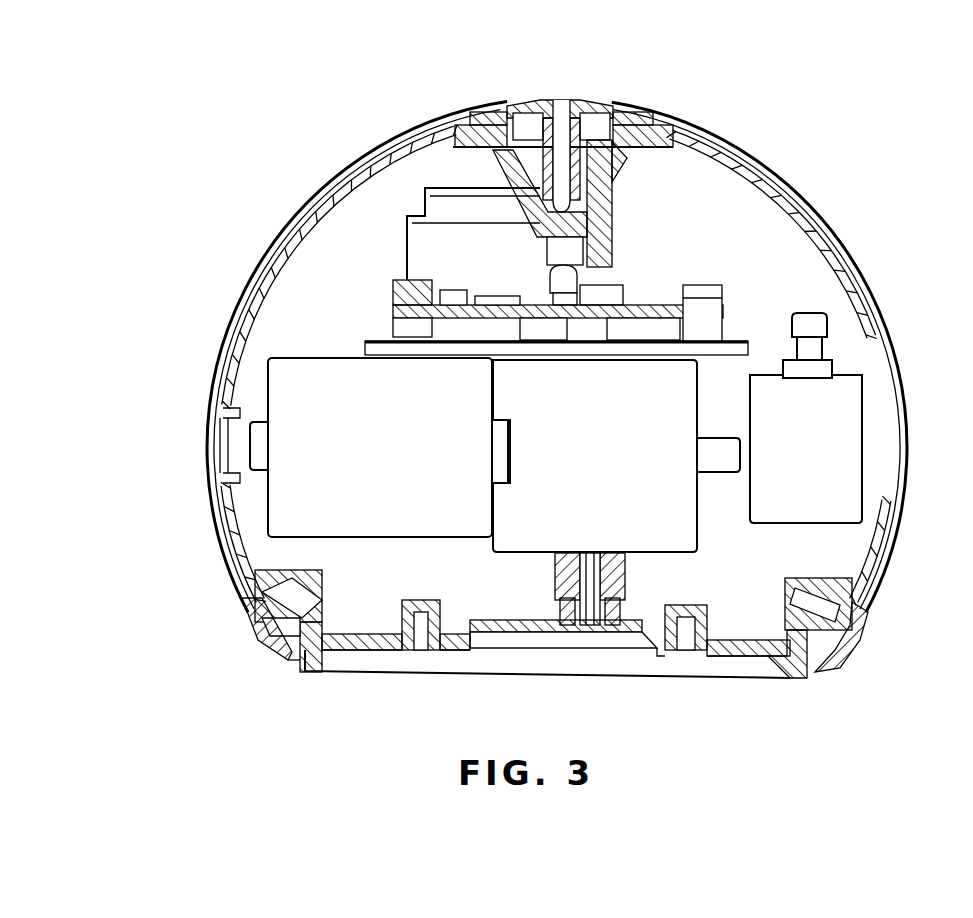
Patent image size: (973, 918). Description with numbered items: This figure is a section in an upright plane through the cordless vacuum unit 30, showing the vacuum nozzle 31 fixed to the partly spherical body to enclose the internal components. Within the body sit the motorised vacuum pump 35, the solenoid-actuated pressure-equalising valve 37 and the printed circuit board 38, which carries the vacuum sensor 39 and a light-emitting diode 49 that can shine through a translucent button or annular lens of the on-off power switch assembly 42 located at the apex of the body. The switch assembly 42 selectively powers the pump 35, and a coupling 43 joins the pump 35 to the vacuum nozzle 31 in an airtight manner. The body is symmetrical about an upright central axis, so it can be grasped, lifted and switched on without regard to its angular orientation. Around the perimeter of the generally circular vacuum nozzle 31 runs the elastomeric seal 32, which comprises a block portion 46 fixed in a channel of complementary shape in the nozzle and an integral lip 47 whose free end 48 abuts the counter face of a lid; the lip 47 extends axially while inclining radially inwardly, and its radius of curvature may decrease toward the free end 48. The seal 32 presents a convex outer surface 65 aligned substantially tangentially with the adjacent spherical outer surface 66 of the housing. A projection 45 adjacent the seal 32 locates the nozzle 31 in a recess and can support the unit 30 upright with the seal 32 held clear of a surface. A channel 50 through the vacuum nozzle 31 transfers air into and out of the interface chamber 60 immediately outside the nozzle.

The cordless vacuum unit 30 is at (890, 158).
The vacuum nozzle 31 is at (818, 690).
The seal 32 is at (238, 634).
The motorised vacuum pump 35 is at (375, 522).
The solenoid-actuated pressure-equalising valve 37 is at (848, 445).
The printed circuit board 38 is at (718, 308).
The vacuum sensor 39 is at (420, 243).
The on-off power switch assembly 42 is at (600, 80).
The coupling 43 is at (553, 575).
The projection 45 is at (362, 658).
The block portion 46 is at (262, 610).
The lip 47 is at (263, 630).
The free end 48 is at (286, 670).
The light-emitting diode 49 is at (575, 262).
The channel 50 is at (587, 630).
The interface chamber 60 is at (678, 665).
The convex outer surface 65 is at (871, 634).
The spherical outer surface 66 is at (895, 591).